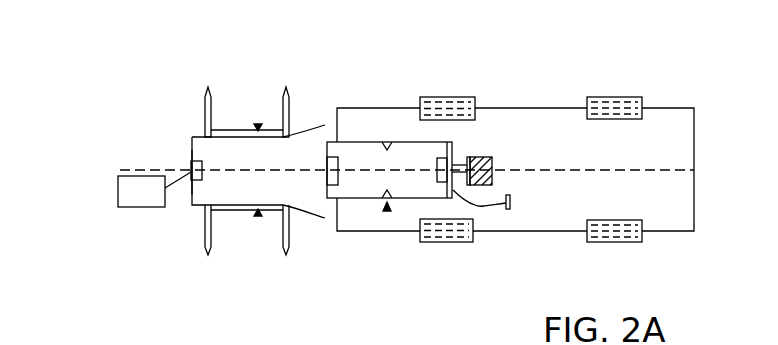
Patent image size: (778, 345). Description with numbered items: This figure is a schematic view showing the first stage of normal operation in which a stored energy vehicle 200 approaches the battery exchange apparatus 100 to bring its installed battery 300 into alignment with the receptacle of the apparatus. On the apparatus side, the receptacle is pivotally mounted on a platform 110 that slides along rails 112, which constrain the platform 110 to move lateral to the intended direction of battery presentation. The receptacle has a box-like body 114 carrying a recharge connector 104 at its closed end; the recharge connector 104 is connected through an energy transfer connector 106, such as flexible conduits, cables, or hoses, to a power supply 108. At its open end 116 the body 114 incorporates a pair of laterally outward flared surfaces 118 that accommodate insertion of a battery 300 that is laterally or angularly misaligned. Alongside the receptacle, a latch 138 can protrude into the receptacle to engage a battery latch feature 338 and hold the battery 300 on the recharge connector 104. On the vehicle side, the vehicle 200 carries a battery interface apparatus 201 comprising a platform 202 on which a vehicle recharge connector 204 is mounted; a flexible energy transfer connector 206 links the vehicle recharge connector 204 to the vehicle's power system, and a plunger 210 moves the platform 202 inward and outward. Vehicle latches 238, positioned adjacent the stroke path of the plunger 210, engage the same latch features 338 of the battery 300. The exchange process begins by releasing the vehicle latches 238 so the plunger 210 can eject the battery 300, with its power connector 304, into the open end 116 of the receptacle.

The battery exchange apparatus 100 is at (207, 70).
The recharge connector 104 is at (192, 172).
The energy transfer connector 106 is at (190, 174).
The power supply 108 is at (118, 192).
The platform 110 is at (243, 119).
The rails 112 is at (205, 228).
The box-like body 114 is at (243, 185).
The open end 116 is at (304, 138).
The flared surfaces 118 is at (316, 267).
The latch 138 is at (256, 215).
The stored energy vehicle 200 is at (675, 85).
The battery interface apparatus 201 is at (500, 91).
The platform 202 is at (452, 193).
The vehicle recharge connector 204 is at (441, 158).
The flexible energy transfer connector 206 is at (508, 200).
The plunger 210 is at (512, 160).
The vehicle latches 238 is at (387, 124).
The battery 300 is at (354, 180).
The power connector 304 is at (339, 158).
The battery latch feature 338 is at (388, 196).